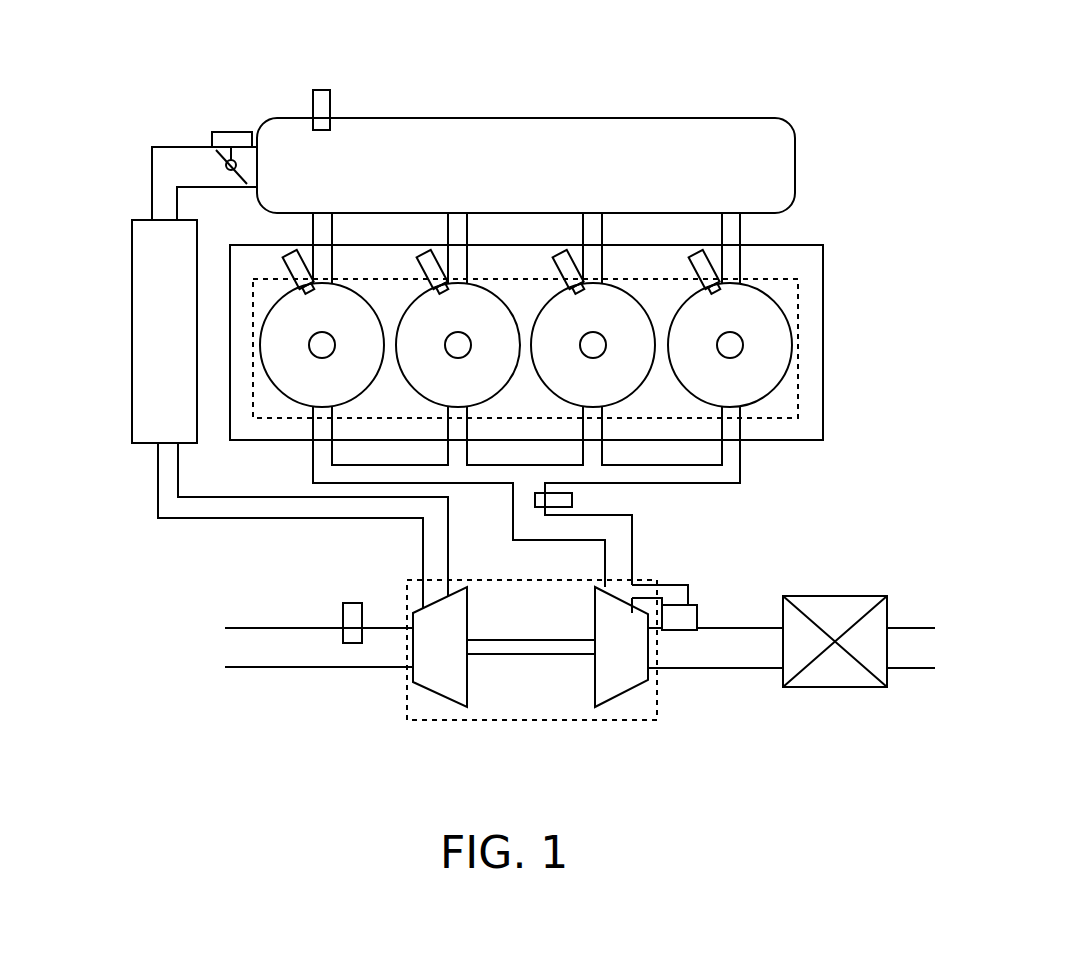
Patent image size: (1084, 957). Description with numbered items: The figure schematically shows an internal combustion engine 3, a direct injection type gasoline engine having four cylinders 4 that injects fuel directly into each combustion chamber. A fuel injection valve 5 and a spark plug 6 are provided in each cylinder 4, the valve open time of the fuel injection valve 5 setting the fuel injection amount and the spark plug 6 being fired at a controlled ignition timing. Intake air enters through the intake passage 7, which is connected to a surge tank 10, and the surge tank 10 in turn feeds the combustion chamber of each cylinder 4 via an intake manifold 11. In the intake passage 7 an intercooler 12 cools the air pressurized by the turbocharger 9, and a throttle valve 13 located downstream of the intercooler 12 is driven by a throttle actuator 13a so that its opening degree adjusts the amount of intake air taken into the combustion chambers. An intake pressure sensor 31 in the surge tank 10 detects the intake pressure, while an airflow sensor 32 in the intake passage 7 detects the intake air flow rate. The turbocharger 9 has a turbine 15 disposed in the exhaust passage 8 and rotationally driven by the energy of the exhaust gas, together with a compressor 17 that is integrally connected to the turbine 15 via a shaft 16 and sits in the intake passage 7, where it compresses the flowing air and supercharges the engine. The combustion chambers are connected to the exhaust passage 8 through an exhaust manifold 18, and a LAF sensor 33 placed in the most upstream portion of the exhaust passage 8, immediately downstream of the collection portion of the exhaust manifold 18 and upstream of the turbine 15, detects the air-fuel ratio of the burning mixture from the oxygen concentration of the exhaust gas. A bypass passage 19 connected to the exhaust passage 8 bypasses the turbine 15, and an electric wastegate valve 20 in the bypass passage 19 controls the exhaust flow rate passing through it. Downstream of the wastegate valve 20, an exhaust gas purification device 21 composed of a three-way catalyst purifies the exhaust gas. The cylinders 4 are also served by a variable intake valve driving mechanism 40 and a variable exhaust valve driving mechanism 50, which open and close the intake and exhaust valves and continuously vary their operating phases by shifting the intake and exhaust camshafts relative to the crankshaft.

The internal combustion engine 3 is at (800, 115).
The cylinder 4 is at (340, 283).
The fuel injection valve 5 is at (283, 264).
The spark plug 6 is at (318, 334).
The intake passage 7 is at (235, 518).
The exhaust passage 8 is at (632, 548).
The turbocharger 9 is at (407, 692).
The surge tank 10 is at (470, 118).
The intake manifold 11 is at (313, 232).
The intercooler 12 is at (132, 312).
The throttle valve 13 is at (226, 162).
The throttle actuator 13a is at (230, 132).
The turbine 15 is at (630, 690).
The shaft 16 is at (527, 640).
The compressor 17 is at (445, 707).
The exhaust manifold 18 is at (313, 462).
The bypass passage 19 is at (690, 588).
The wastegate valve 20 is at (698, 612).
The exhaust gas purification device 21 is at (855, 596).
The intake pressure sensor 31 is at (320, 90).
The airflow sensor 32 is at (350, 603).
The LAF sensor 33 is at (572, 498).
The variable intake valve driving mechanism 40 is at (798, 312).
The variable exhaust valve driving mechanism 50 is at (525, 348).